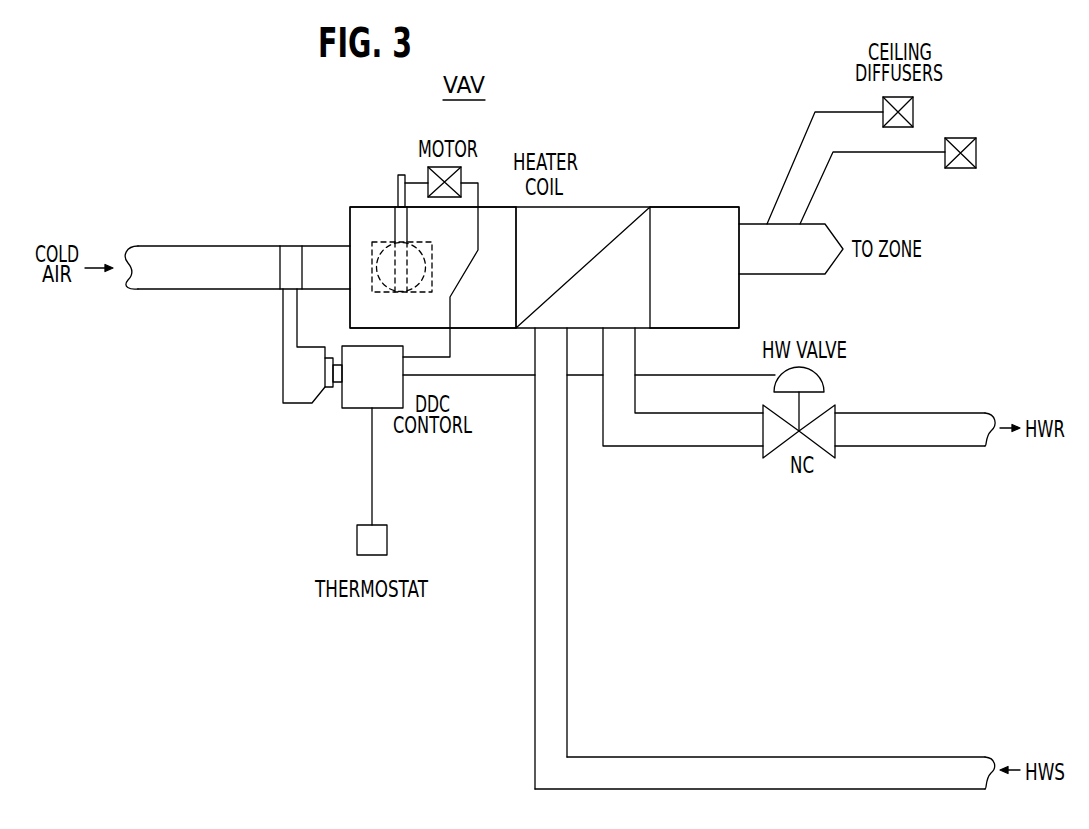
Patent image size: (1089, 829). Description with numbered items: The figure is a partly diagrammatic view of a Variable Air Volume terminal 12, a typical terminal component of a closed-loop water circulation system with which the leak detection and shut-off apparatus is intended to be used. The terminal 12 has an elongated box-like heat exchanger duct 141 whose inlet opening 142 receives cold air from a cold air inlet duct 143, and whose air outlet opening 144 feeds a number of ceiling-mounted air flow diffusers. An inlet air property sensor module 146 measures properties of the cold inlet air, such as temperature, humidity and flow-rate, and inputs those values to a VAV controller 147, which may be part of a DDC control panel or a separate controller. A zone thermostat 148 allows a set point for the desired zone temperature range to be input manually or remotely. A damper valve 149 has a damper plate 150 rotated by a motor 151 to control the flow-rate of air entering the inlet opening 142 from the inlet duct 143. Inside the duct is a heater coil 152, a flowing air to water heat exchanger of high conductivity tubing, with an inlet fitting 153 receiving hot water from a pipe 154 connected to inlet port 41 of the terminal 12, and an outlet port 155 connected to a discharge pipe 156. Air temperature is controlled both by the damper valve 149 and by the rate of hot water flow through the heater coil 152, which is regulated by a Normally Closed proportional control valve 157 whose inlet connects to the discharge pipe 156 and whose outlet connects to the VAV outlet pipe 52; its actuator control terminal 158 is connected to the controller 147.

The Variable Air Volume (VAV) terminal 12 is at (592, 128).
The inlet port 41 is at (968, 757).
The VAV outlet pipe 52 is at (920, 413).
The heat exchanger duct 141 is at (686, 204).
The inlet opening 142 is at (348, 228).
The cold air inlet duct 143 is at (222, 246).
The air outlet opening 144 is at (742, 277).
The inlet air property sensor module 146 is at (281, 410).
The VAV controller 147 is at (354, 410).
The zone thermostat 148 is at (356, 533).
The damper valve 149 is at (393, 191).
The damper plate 150 is at (372, 292).
The motor 151 is at (463, 173).
The heater coil 152 is at (596, 207).
The inlet fitting 153 is at (535, 330).
The pipe 154 is at (535, 692).
The outlet port 155 is at (628, 329).
The discharge pipe 156 is at (675, 447).
The Normally Closed proportional control valve 157 is at (831, 396).
The actuator control terminal 158 is at (757, 378).